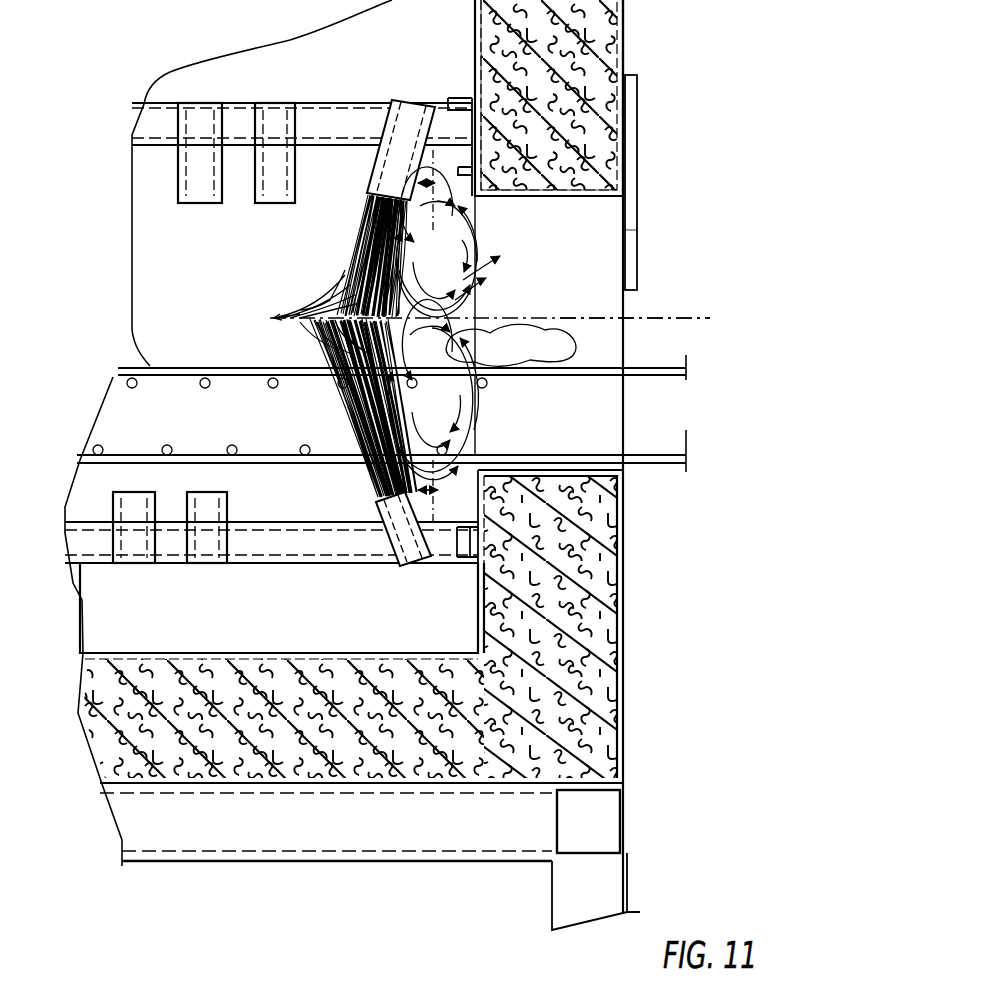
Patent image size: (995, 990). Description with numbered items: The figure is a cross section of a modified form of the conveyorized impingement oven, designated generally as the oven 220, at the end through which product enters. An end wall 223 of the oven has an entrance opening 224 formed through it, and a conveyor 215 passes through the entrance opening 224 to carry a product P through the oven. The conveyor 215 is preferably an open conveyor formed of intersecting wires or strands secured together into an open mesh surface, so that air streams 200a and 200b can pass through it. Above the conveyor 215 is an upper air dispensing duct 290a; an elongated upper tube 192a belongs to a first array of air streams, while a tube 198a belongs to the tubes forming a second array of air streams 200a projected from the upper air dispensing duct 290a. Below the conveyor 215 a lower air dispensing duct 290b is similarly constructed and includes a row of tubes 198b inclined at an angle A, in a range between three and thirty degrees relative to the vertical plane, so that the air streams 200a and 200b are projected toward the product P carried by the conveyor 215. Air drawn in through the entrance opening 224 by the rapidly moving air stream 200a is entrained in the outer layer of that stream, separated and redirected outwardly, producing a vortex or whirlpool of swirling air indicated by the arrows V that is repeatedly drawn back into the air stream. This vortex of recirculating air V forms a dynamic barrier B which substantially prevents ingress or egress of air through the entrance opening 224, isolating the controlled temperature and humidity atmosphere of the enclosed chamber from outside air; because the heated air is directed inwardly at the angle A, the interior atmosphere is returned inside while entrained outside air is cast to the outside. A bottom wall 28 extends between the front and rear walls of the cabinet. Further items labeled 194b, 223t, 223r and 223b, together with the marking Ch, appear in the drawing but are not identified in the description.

The upper air dispensing duct 290a is at (178, 87).
The lower air dispensing duct 290b is at (103, 565).
The elongated upper tube 192a is at (178, 152).
The hanger member 194b is at (277, 190).
The tube 198a is at (410, 127).
The tube 198b is at (406, 538).
The air stream 200a is at (350, 248).
The air stream 200b is at (372, 490).
The conveyor 215 is at (132, 330).
The oven 220 is at (630, 41).
The end wall 223 is at (600, 152).
The wall top panel 223t is at (590, 200).
The wall panel 223r is at (587, 240).
The entrance opening 224 is at (590, 325).
The lower wall 223b is at (598, 470).
The bottom wall 28 is at (355, 787).
The angle A is at (438, 340).
The dynamic barrier B is at (483, 222).
The vortex of swirling air V is at (485, 266).
The product P is at (527, 333).
The chamber center Ch is at (608, 274).